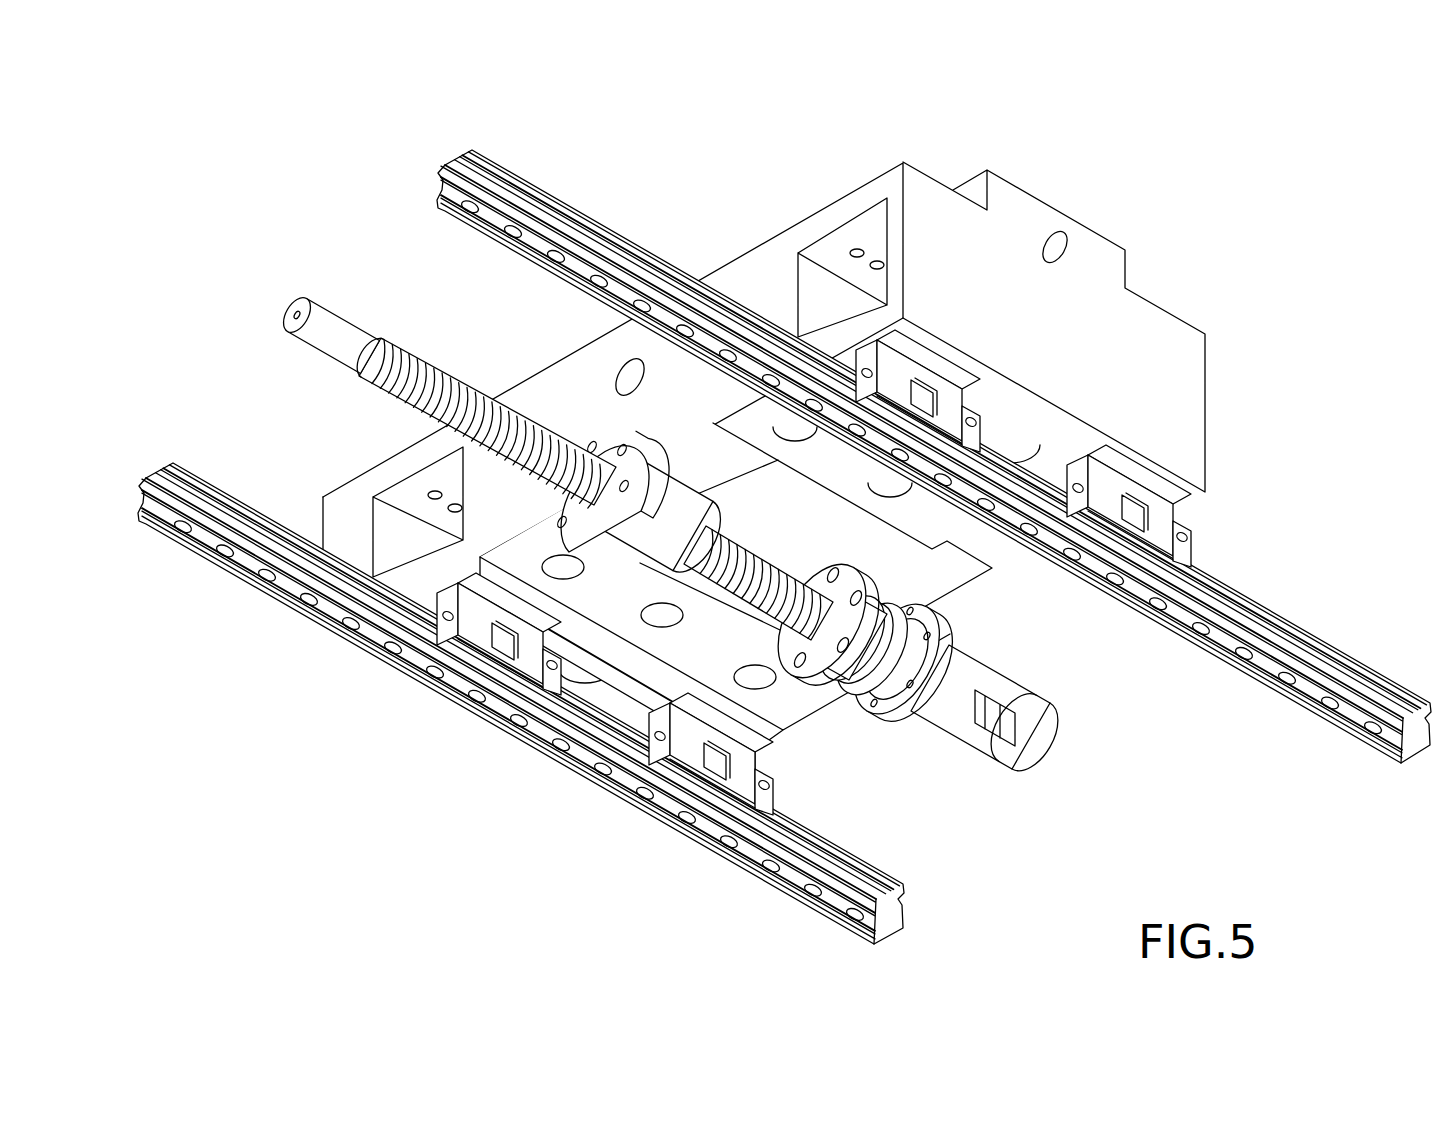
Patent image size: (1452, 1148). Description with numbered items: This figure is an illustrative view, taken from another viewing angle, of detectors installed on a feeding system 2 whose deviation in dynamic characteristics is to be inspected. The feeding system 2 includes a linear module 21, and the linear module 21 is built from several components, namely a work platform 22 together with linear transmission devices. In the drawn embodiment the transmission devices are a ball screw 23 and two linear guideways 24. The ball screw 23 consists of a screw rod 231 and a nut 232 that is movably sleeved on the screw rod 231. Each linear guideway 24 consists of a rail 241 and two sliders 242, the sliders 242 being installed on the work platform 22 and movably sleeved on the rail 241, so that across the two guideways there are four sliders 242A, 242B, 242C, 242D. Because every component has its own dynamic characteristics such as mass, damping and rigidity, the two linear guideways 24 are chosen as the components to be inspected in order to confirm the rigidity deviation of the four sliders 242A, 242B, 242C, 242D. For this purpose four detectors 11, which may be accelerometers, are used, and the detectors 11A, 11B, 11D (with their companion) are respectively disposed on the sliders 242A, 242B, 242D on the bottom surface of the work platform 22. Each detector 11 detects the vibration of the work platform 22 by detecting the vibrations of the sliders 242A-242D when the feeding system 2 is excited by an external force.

The feeding system 2 is at (818, 312).
The linear module 21 is at (1246, 135).
The work platform 22 is at (1060, 220).
The ball screw 23 is at (1022, 782).
The screw rod 231 is at (555, 447).
The nut 232 is at (606, 448).
The linear guideway 24 is at (784, 547).
The rail 241 is at (192, 482).
The slider 242 is at (796, 632).
The slider 242A is at (475, 620).
The slider 242B is at (687, 740).
The slider 242C is at (1012, 425).
The slider 242D is at (1160, 543).
The detector 11 is at (922, 642).
The detector 11A is at (505, 645).
The detector 11B is at (717, 765).
The detector 11D is at (928, 387).